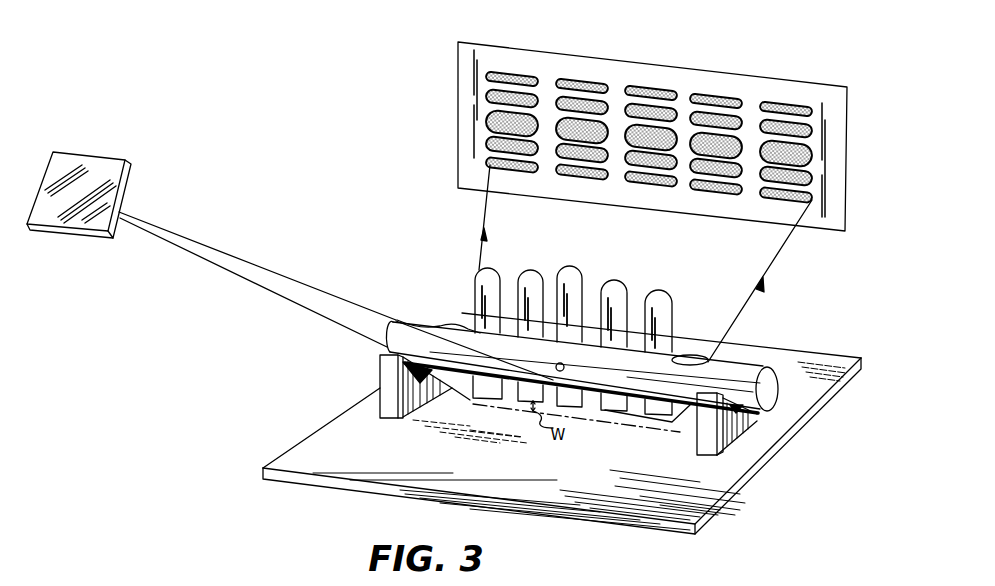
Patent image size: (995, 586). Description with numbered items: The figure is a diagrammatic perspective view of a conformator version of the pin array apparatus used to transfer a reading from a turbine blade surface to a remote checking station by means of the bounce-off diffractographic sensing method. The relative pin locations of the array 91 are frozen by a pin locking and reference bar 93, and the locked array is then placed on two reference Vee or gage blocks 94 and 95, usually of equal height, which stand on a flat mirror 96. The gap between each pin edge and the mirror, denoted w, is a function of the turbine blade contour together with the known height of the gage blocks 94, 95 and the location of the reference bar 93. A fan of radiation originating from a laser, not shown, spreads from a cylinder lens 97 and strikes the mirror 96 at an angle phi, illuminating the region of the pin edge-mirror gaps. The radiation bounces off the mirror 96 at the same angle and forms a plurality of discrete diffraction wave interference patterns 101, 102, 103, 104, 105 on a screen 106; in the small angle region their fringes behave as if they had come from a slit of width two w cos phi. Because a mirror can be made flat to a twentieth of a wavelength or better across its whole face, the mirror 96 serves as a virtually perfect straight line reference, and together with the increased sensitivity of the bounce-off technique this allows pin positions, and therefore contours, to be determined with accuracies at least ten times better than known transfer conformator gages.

The cylindrical rod 91 is at (682, 347).
The pin locking and reference bar 93 is at (767, 378).
The gage block 94 is at (747, 433).
The gage block 95 is at (380, 383).
The flat mirror 96 is at (707, 517).
The cylinder lens 97 is at (89, 152).
The diffraction wave interference pattern 101 is at (788, 108).
The diffraction wave interference pattern 102 is at (717, 100).
The diffraction wave interference pattern 103 is at (648, 92).
The diffraction wave interference pattern 104 is at (578, 83).
The diffraction wave interference pattern 105 is at (507, 75).
The screen 106 is at (817, 231).